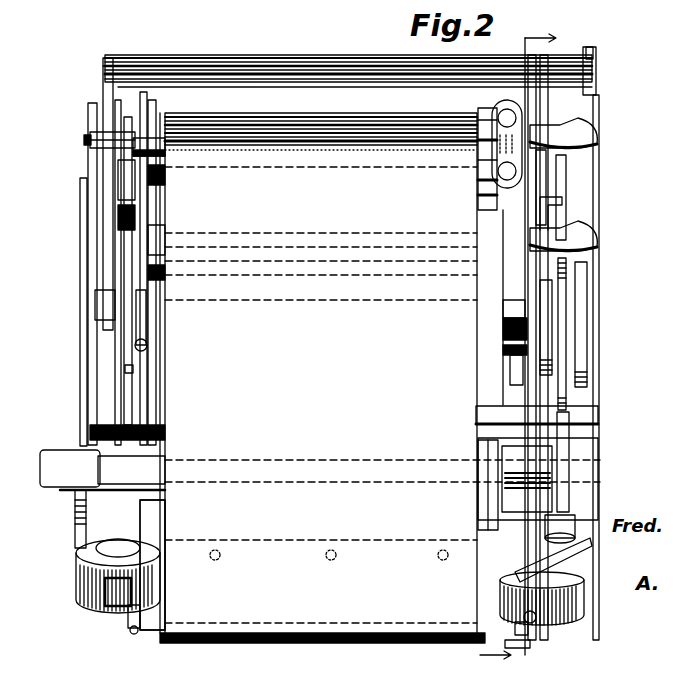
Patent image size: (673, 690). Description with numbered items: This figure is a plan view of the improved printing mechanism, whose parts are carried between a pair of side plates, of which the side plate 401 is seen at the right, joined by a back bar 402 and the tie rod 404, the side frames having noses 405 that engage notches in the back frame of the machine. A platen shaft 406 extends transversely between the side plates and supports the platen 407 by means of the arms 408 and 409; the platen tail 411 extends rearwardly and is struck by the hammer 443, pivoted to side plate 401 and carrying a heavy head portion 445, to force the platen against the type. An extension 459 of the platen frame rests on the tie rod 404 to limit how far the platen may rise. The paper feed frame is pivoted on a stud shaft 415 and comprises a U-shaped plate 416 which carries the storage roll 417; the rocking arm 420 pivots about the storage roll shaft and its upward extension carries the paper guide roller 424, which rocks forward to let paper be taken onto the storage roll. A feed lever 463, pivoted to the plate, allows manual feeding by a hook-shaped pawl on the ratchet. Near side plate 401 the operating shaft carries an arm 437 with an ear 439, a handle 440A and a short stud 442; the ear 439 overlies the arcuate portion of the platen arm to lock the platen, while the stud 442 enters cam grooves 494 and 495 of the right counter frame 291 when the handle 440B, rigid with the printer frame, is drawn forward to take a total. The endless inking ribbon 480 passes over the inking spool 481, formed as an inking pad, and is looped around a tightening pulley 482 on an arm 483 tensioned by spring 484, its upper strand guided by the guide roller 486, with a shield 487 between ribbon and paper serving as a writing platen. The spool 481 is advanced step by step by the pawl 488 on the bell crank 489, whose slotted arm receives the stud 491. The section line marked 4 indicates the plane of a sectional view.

The side plate 401 is at (595, 332).
The back bar 402 is at (300, 57).
The tie rod 404 is at (585, 408).
The nose 405 is at (128, 55).
The platen shaft 406 is at (598, 458).
The platen 407 is at (318, 540).
The arm 408 is at (162, 524).
The arm 409 is at (490, 514).
The platen tail 411 is at (565, 183).
The stud shaft 415 is at (60, 450).
The U-shaped plate 416 is at (128, 369).
The storage roll 417 is at (482, 130).
The rocking arm 420 is at (143, 130).
The paper guide roller 424 is at (170, 166).
The arm 437 is at (540, 162).
The ear 439 is at (562, 200).
The handle 440A is at (575, 233).
The handle 440B is at (578, 128).
The short stud 442 is at (505, 326).
The hammer 443 is at (575, 280).
The head portion 445 is at (576, 355).
The extension 459 is at (568, 420).
The feed lever 463 is at (146, 314).
The endless inking ribbon 480 is at (118, 615).
The inking spool 481 is at (100, 610).
The tightening pulley 482 is at (585, 600).
The arm 483 is at (135, 632).
The spring 484 is at (580, 544).
The guide roller 486 is at (528, 628).
The shield 487 is at (530, 648).
The pawl 488 is at (75, 523).
The bell crank 489 is at (81, 336).
The stud 491 is at (84, 142).
The cam groove 494 is at (505, 349).
The cam groove 495 is at (516, 370).
The right counter frame 291 is at (510, 305).
The section line 4 is at (509, 340).